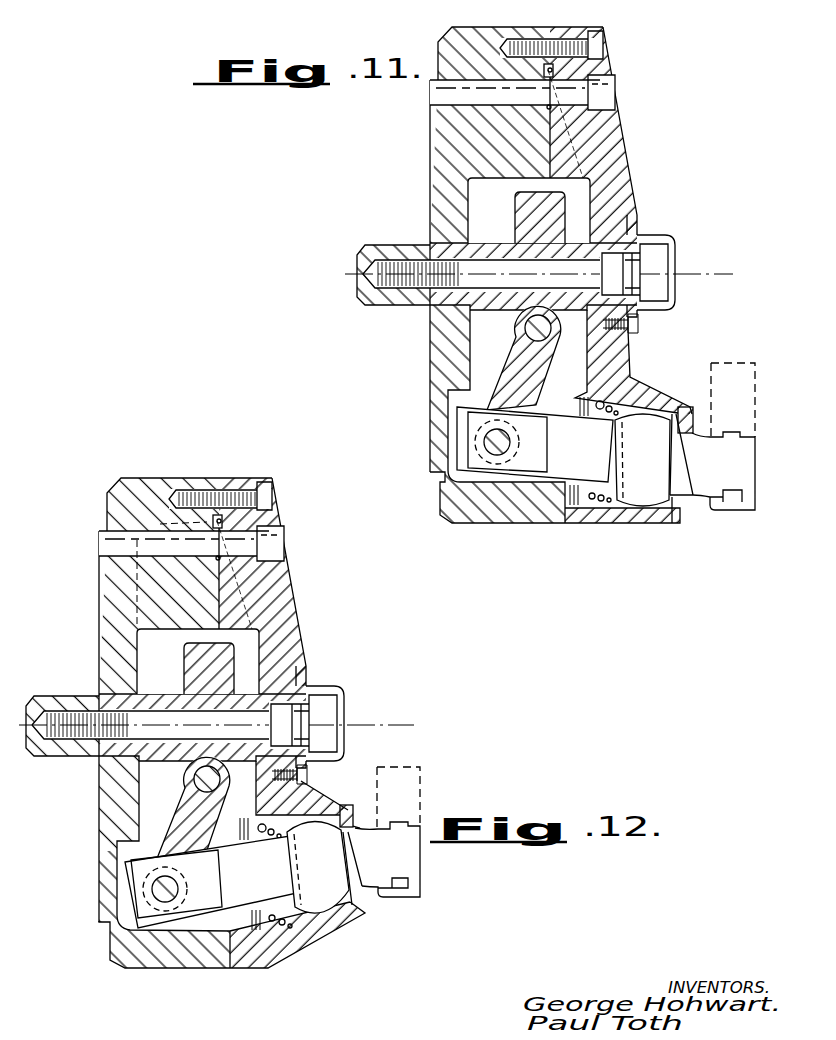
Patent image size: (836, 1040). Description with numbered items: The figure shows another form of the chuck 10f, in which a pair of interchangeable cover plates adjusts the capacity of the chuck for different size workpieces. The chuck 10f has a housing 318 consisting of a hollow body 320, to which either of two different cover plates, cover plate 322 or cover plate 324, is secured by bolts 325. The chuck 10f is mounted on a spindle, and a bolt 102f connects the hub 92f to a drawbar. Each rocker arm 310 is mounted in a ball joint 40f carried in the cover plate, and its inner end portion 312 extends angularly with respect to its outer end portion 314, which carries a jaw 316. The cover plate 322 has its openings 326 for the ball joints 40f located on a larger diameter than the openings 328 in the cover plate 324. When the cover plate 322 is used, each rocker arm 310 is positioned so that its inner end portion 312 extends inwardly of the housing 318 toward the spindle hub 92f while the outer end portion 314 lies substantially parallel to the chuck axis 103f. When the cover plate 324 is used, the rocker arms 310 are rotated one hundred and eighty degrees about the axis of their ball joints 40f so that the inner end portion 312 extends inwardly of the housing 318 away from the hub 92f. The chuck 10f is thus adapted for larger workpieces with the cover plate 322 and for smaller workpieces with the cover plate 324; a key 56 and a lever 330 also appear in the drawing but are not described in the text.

In FIG. 11, the chuck 10f is at (427, 488).
In FIG. 12, the chuck 10f is at (132, 985).
In FIG. 11, the ball joint 40f is at (666, 404).
In FIG. 11, the key 56 is at (698, 418).
In FIG. 12, the key 56 is at (357, 812).
In FIG. 11, the hub 92f is at (527, 280).
In FIG. 11, the bolt 102f is at (396, 306).
In FIG. 11, the chuck axis 103f is at (705, 270).
In FIG. 12, the chuck axis 103f is at (355, 716).
In FIG. 11, the rocker arm 310 is at (645, 490).
In FIG. 12, the rocker arm 310 is at (326, 893).
In FIG. 11, the inner end portion 312 is at (530, 478).
In FIG. 12, the inner end portion 312 is at (243, 893).
In FIG. 11, the outer end portion 314 is at (742, 455).
In FIG. 12, the outer end portion 314 is at (407, 862).
In FIG. 11, the jaw 316 is at (755, 360).
In FIG. 11, the housing 318 is at (473, 525).
In FIG. 11, the hollow body 320 is at (445, 140).
In FIG. 11, the cover plate 322 is at (615, 147).
In FIG. 12, the cover plate 324 is at (223, 700).
In FIG. 11, the bolt 325 is at (605, 46).
In FIG. 12, the bolt 325 is at (249, 489).
In FIG. 11, the opening 326 is at (645, 385).
In FIG. 12, the opening 328 is at (305, 796).
In FIG. 11, the lever 330 is at (515, 362).
In FIG. 12, the lever 330 is at (134, 808).